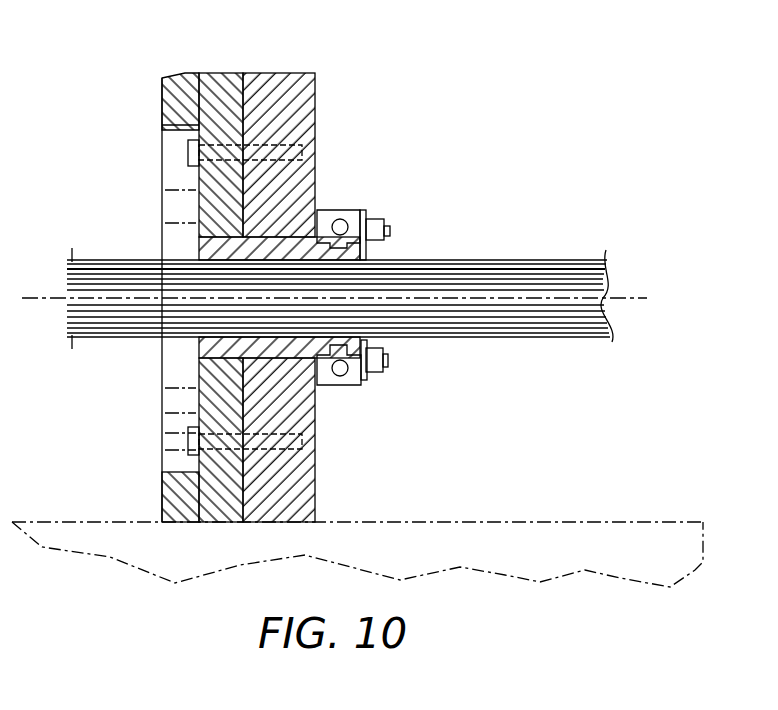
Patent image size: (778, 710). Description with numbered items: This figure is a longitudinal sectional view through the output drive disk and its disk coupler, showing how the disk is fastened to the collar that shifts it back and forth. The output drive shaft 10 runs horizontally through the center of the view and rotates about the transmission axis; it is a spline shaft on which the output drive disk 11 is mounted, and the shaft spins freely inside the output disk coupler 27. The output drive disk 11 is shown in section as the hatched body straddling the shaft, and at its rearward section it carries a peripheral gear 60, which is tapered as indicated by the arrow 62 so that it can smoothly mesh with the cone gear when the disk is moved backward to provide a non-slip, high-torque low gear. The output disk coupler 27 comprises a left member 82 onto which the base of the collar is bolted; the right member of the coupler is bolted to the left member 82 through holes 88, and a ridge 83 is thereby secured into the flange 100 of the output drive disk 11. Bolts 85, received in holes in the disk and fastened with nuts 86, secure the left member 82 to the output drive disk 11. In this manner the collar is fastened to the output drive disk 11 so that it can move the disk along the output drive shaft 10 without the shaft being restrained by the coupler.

The output drive shaft 10 is at (445, 260).
The output drive disk 11 is at (270, 71).
The output disk coupler 27 is at (362, 208).
The peripheral gear 60 is at (212, 72).
The taper of peripheral gear 62 is at (178, 72).
The left member 82 is at (337, 209).
The ridge 83 is at (333, 374).
The bolts 85 is at (186, 155).
The nuts 86 is at (374, 376).
The holes 88 is at (344, 373).
The flange 100 is at (222, 343).